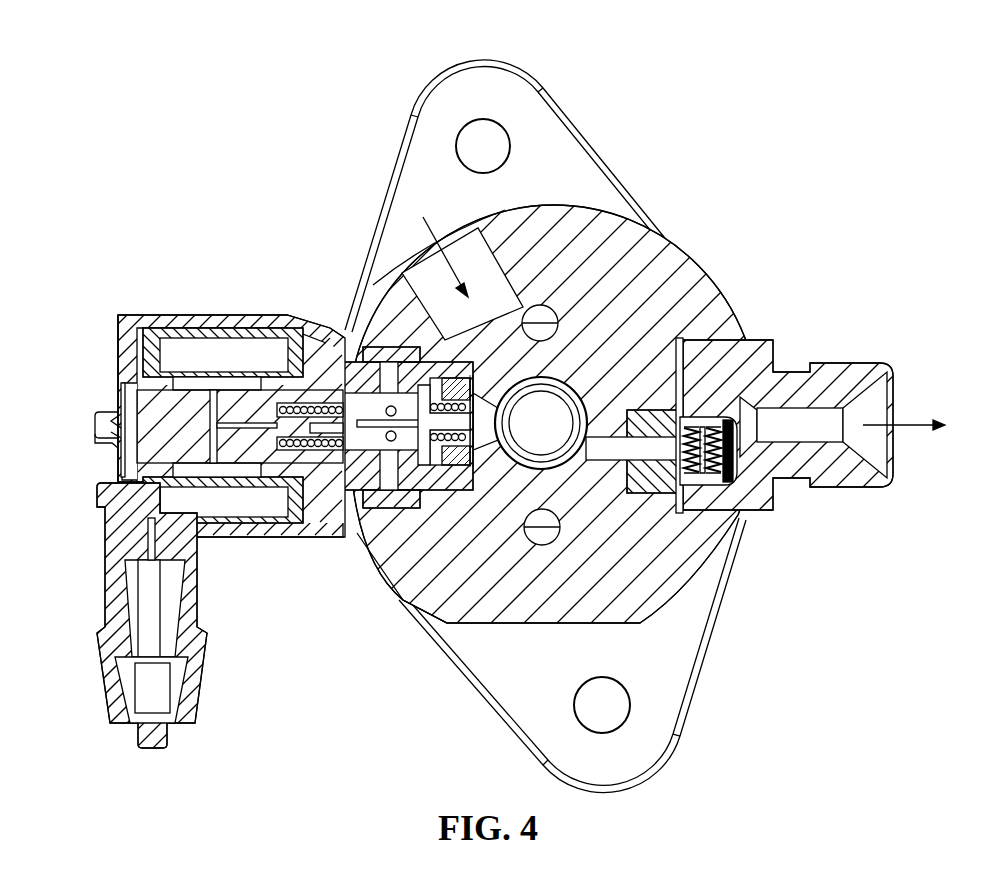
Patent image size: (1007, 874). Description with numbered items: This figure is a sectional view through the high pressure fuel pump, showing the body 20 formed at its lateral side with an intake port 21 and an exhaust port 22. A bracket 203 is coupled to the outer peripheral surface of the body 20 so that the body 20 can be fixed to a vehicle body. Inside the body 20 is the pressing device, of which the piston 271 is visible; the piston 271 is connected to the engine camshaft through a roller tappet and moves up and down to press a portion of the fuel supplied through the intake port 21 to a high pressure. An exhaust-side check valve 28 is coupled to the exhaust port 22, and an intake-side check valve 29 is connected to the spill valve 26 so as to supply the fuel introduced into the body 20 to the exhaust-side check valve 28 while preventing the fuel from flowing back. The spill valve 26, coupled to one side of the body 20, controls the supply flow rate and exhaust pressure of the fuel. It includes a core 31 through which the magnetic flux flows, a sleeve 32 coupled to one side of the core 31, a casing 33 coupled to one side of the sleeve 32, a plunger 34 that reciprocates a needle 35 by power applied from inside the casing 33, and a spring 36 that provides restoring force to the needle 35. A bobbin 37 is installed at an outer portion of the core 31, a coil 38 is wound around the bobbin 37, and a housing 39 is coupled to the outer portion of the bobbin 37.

The body 20 is at (660, 252).
The intake port 21 is at (443, 337).
The exhaust port 22 is at (855, 365).
The spill valve 26 is at (180, 305).
The exhaust-side check valve 28 is at (707, 500).
The intake-side check valve 29 is at (405, 602).
The core 31 is at (122, 453).
The sleeve 32 is at (245, 330).
The casing 33 is at (310, 330).
The plunger 34 is at (250, 464).
The needle 35 is at (430, 478).
The spring 36 is at (315, 450).
The bobbin 37 is at (120, 380).
The coil 38 is at (205, 330).
The housing 39 is at (136, 318).
The bracket 203 is at (540, 78).
The piston 271 is at (553, 412).